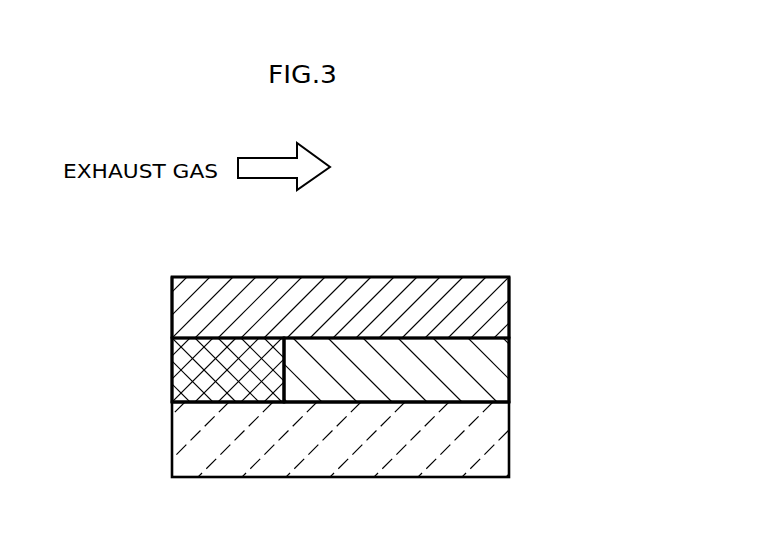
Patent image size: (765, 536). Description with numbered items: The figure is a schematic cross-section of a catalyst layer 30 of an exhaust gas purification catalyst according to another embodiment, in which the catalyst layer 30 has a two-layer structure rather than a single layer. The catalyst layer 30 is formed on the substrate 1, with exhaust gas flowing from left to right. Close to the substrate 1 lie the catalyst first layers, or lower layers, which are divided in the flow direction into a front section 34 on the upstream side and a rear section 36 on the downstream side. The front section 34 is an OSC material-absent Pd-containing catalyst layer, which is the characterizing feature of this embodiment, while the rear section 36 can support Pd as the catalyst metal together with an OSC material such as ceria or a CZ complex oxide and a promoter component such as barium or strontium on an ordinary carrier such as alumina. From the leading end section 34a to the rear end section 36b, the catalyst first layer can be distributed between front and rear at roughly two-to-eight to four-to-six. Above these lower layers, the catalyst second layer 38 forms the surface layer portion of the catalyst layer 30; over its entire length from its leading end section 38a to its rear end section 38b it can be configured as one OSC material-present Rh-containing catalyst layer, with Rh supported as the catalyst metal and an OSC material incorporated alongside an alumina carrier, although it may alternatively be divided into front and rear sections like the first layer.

The substrate 1 is at (510, 450).
The catalyst layer 30 is at (575, 277).
The front section 34 is at (243, 395).
The leading end section 34a is at (172, 370).
The rear section 36 is at (413, 397).
The rear end section 36b is at (510, 373).
The catalyst second layer 38 is at (373, 278).
The leading end section 38a is at (172, 303).
The rear end section 38b is at (510, 303).